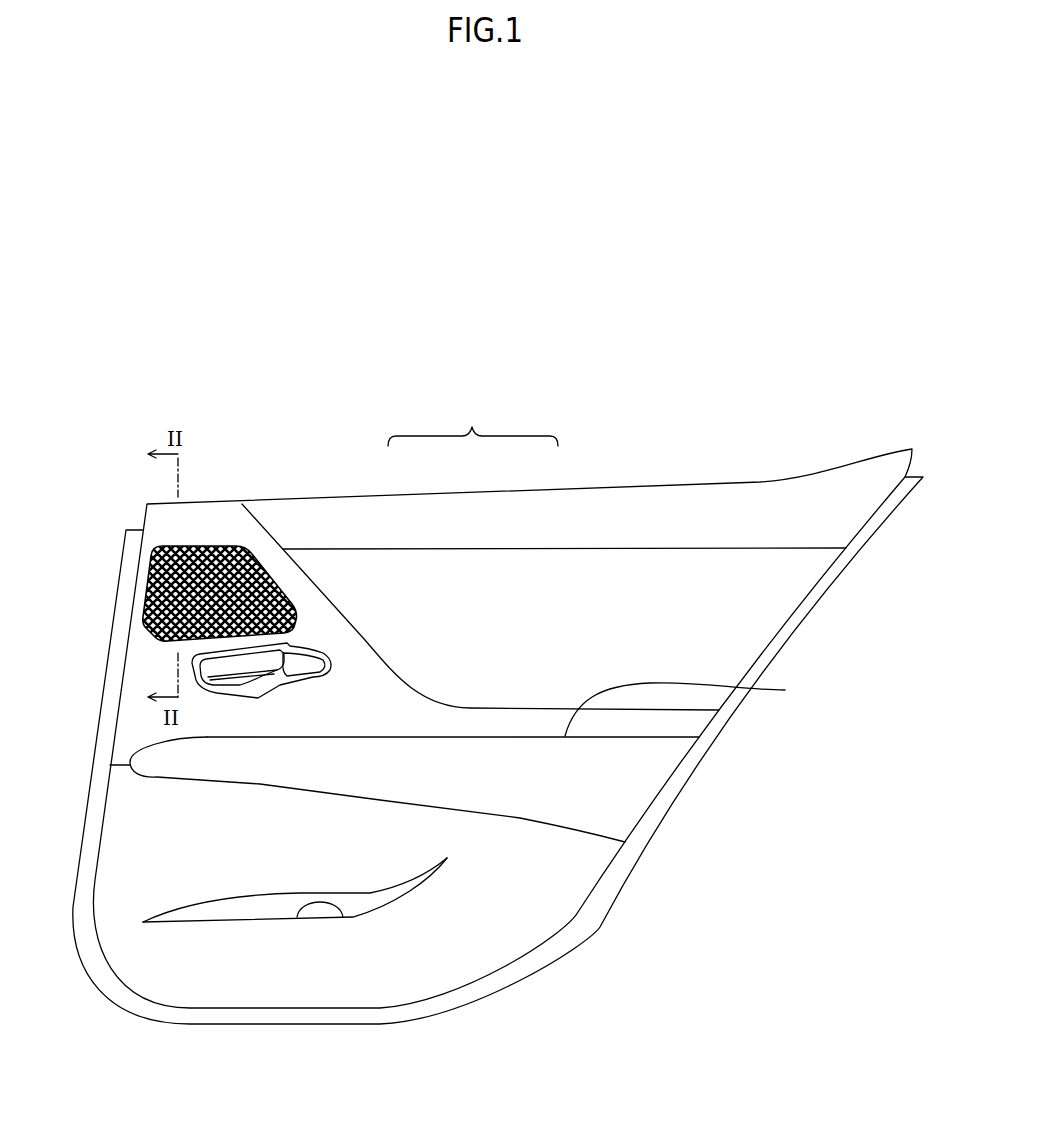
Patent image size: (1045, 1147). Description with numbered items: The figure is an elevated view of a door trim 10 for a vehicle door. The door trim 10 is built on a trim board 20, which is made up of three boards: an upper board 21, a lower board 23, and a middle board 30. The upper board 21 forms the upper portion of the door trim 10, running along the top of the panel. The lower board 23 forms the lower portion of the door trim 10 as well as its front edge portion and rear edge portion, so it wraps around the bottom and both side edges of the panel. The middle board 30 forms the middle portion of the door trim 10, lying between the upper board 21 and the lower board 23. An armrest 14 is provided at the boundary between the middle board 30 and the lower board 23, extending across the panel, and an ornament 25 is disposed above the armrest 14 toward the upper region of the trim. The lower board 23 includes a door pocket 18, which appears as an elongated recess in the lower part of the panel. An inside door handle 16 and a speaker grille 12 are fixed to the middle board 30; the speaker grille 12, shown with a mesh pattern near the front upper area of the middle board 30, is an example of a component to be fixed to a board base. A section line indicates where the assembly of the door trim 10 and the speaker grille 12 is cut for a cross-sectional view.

The door trim 10 is at (696, 407).
The speaker grille 12 is at (228, 547).
The armrest 14 is at (690, 705).
The inside door handle 16 is at (258, 680).
The door pocket 18 is at (343, 917).
The trim board 20 is at (473, 420).
The upper board 21 is at (547, 513).
The lower board 23 is at (330, 830).
The ornament 25 is at (745, 612).
The middle board 30 is at (415, 705).